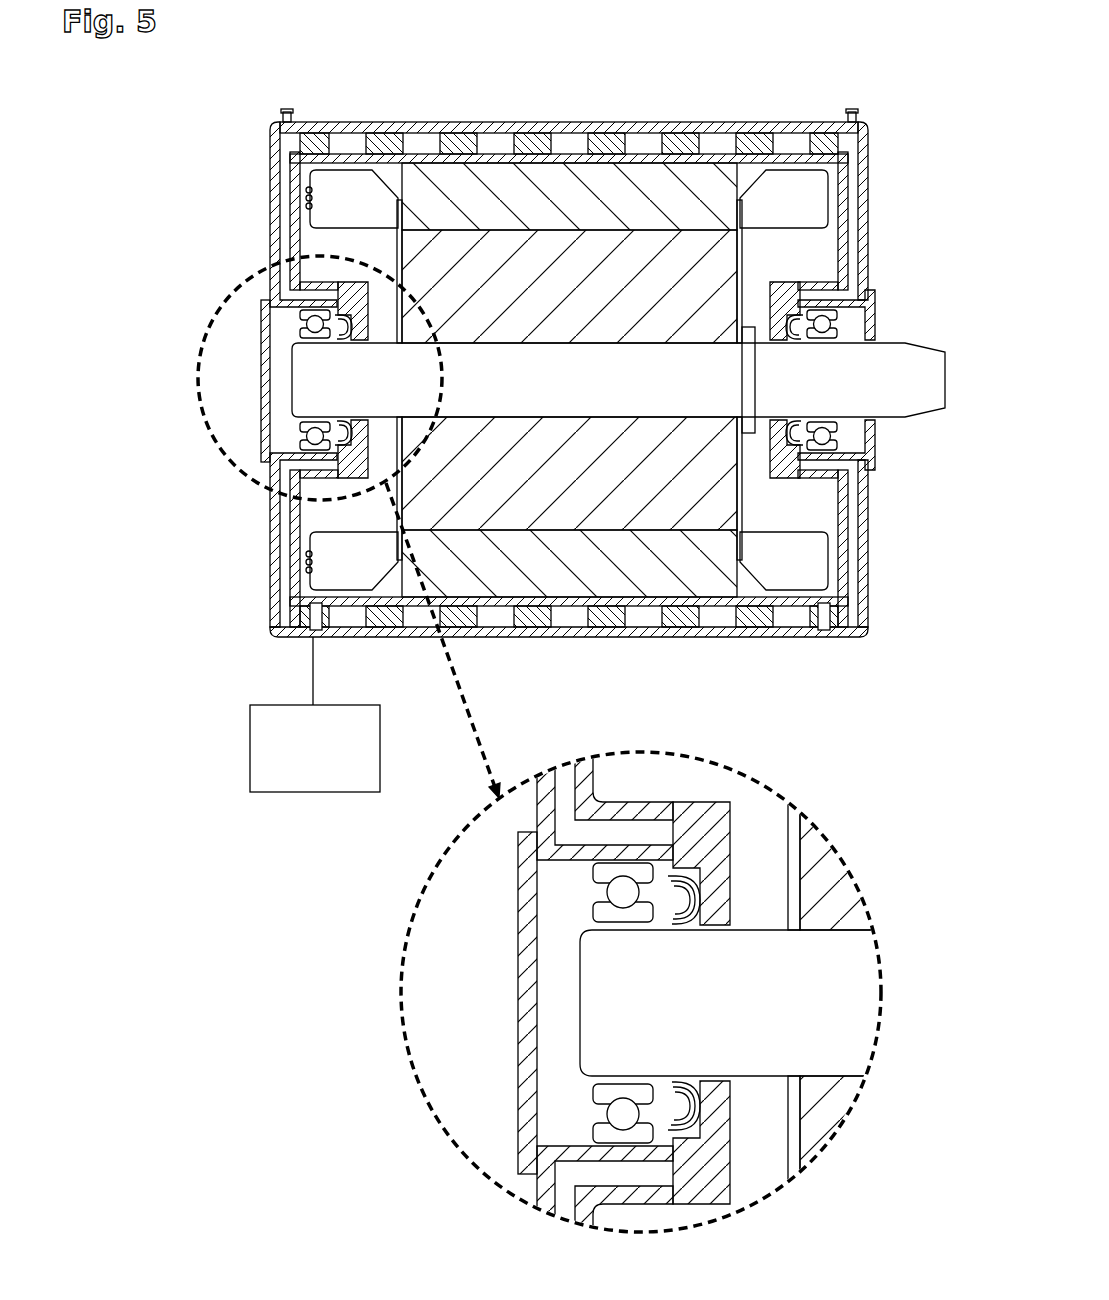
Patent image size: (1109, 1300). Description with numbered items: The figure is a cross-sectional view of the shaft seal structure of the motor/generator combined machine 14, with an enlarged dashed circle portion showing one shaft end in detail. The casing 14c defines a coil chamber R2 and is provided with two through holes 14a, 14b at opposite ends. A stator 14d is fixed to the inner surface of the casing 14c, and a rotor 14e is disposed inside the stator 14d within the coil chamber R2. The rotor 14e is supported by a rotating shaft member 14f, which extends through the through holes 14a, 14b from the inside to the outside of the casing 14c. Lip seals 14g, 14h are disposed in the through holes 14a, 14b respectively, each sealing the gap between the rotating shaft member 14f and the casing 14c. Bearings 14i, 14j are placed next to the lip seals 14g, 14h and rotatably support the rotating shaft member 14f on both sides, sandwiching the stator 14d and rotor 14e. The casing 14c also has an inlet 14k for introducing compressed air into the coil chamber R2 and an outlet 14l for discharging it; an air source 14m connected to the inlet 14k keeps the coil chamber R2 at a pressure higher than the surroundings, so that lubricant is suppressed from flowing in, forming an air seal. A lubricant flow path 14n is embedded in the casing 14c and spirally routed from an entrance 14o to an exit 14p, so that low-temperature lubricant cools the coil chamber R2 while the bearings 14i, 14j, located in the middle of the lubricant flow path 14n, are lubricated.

The motor/generator combined machine 14 is at (884, 122).
The through hole 14a is at (288, 325).
The through hole 14b is at (858, 320).
The casing 14c is at (272, 126).
The stator 14d is at (620, 180).
The rotor 14e is at (680, 245).
The rotating shaft member 14f is at (905, 418).
The lip seal 14g is at (340, 318).
The lip seal 14h is at (872, 440).
The bearing 14i is at (306, 440).
The bearing 14j is at (852, 472).
The inlet 14k is at (312, 640).
The outlet 14l is at (822, 640).
The air source 14m is at (250, 745).
The lubricant flow path 14n is at (430, 140).
The entrance 14o is at (338, 128).
The exit 14p is at (290, 625).
The coil chamber R2 is at (796, 262).